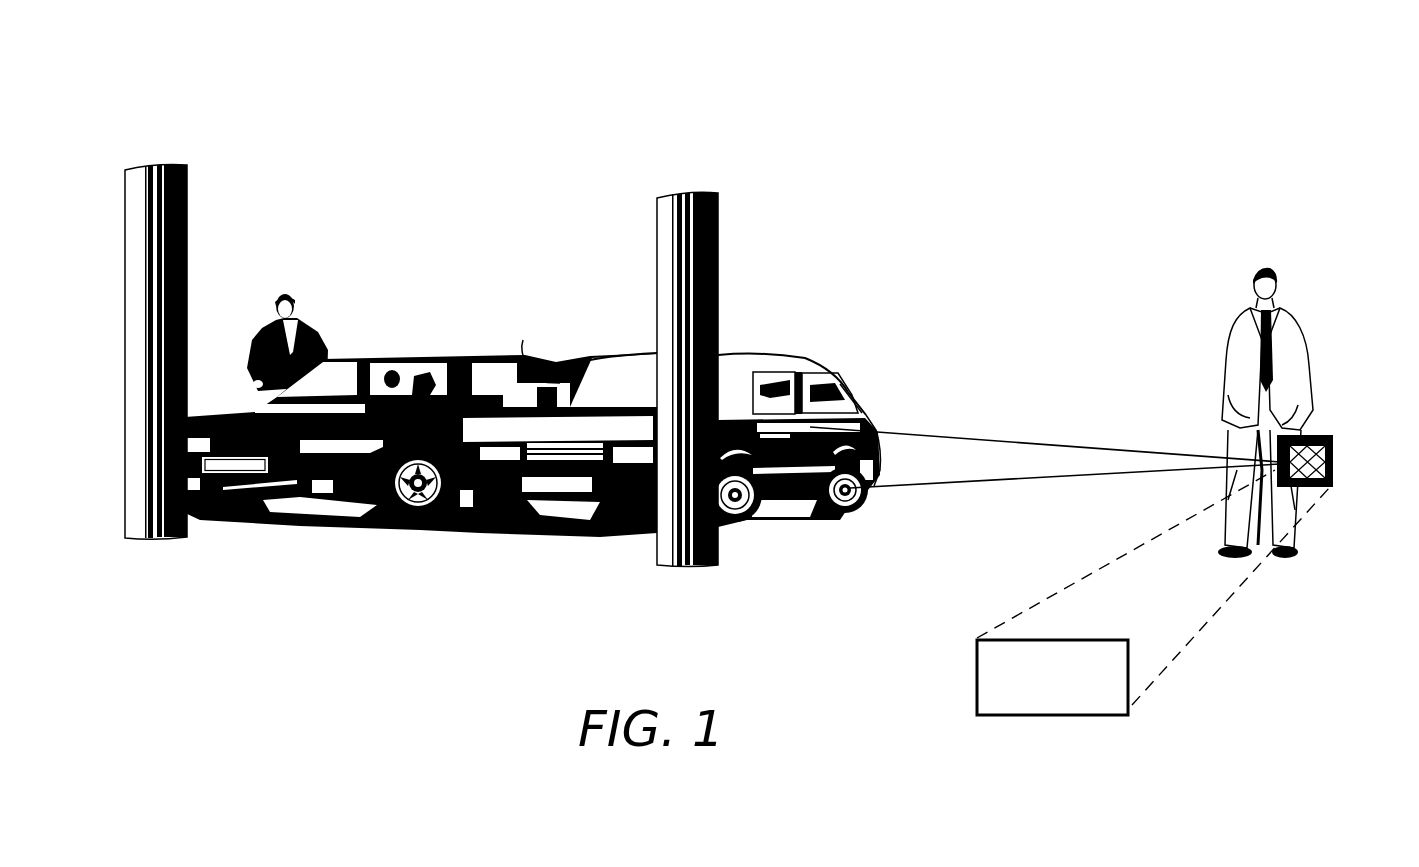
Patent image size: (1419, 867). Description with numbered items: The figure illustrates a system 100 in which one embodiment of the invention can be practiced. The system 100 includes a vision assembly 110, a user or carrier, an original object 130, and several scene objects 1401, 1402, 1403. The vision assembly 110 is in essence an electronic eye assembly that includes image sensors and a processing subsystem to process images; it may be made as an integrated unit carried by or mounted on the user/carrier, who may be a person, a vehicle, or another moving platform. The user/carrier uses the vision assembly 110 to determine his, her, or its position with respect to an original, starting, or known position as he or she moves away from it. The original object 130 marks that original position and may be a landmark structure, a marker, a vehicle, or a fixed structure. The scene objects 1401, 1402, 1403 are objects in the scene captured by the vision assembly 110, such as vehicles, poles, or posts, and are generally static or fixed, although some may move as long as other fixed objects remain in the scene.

The system 100 is at (1294, 62).
The vision assembly 110 is at (1103, 638).
The original object 130 is at (762, 355).
The scene object 1401 is at (522, 372).
The scene object 1402 is at (660, 216).
The scene object 1403 is at (137, 197).